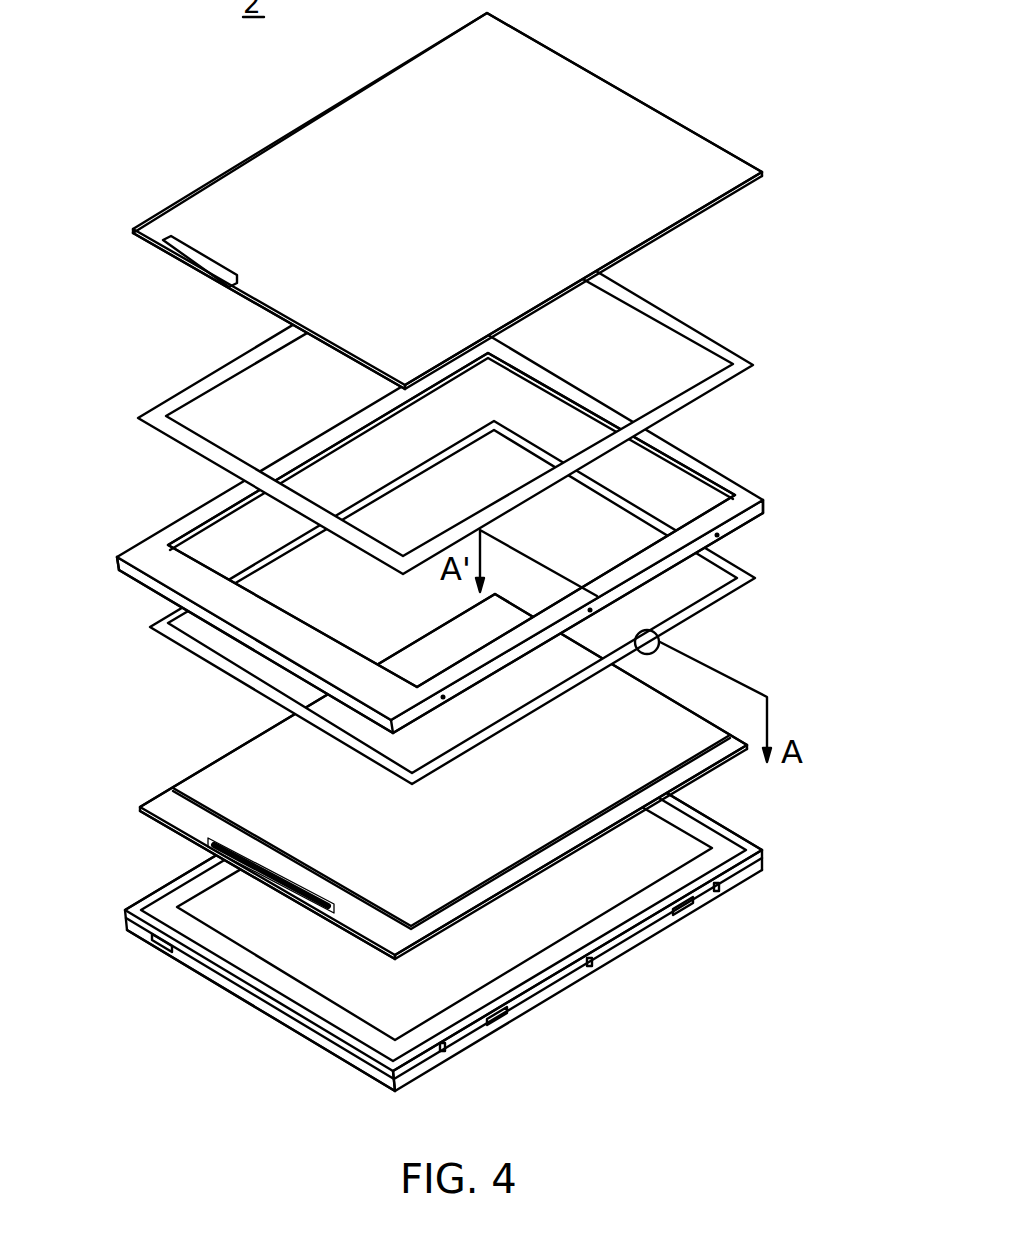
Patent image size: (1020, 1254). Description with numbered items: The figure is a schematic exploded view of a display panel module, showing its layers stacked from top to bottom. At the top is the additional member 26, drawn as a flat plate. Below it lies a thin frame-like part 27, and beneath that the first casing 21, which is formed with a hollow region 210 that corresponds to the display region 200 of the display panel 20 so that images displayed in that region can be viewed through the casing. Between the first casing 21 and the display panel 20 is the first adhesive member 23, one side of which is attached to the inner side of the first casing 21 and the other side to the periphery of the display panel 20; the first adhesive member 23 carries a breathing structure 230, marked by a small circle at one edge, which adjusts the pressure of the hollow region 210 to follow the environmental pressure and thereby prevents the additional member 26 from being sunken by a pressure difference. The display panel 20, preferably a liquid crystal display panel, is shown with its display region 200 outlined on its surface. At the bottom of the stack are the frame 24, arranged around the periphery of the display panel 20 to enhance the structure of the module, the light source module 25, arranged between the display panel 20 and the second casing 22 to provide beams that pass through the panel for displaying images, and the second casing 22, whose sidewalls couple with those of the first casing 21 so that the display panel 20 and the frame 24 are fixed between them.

The additional member 26 is at (276, 196).
The upper frame 27 is at (160, 420).
The first casing 21 is at (475, 534).
The hollow region 210 is at (673, 493).
The first adhesive member 23 is at (717, 597).
The breathing structure 230 is at (660, 648).
The display panel 20 is at (397, 776).
The display region 200 is at (243, 773).
The frame 24 is at (511, 908).
The light source module 25 is at (577, 880).
The second casing 22 is at (523, 1007).